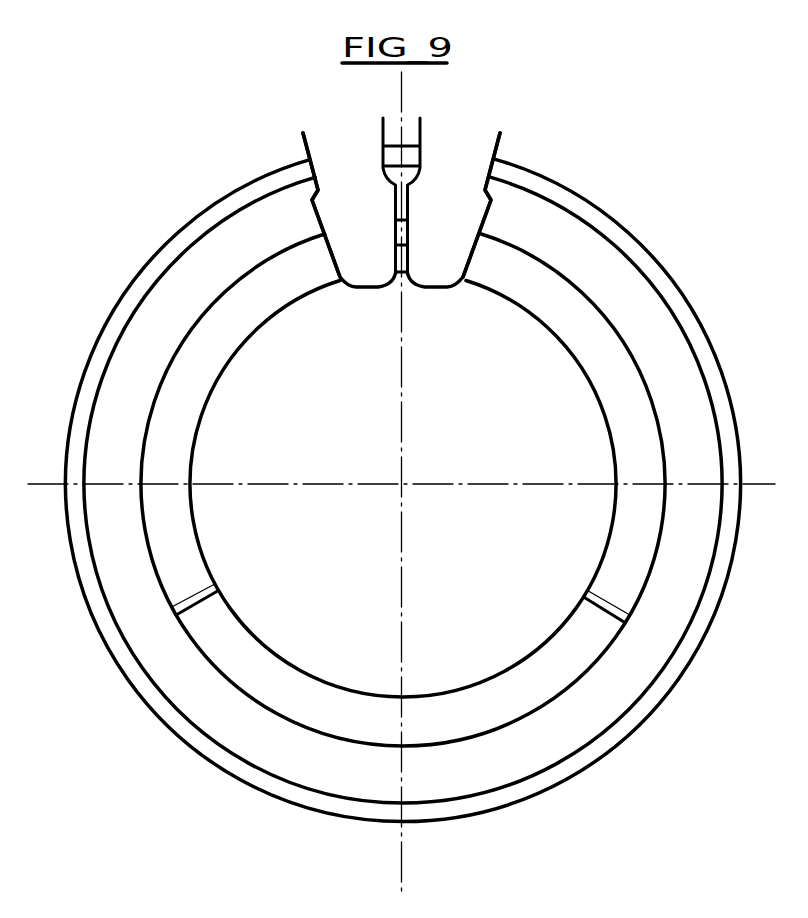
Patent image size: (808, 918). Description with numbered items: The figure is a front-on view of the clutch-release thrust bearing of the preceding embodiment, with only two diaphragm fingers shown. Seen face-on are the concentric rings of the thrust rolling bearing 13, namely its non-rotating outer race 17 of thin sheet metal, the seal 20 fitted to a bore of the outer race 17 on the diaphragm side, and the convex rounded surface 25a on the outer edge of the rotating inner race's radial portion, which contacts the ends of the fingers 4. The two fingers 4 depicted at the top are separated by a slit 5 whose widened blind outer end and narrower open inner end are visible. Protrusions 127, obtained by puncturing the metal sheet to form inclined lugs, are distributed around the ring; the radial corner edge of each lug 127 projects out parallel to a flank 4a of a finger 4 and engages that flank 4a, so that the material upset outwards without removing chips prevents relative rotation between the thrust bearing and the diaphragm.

The thrust rolling bearing 13 is at (630, 213).
The outer race 17 is at (670, 277).
The seal 20 is at (676, 357).
The convex rounded surface 25a is at (658, 447).
The radial finger 4 is at (357, 273).
The flank 4a is at (398, 207).
The slit 5 is at (400, 185).
The protrusion (inclined lug) 127 is at (400, 274).